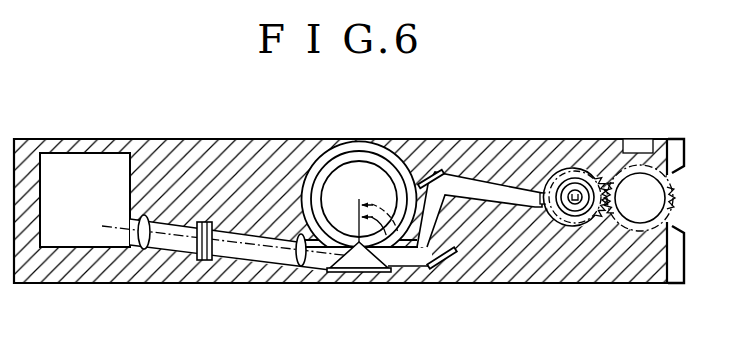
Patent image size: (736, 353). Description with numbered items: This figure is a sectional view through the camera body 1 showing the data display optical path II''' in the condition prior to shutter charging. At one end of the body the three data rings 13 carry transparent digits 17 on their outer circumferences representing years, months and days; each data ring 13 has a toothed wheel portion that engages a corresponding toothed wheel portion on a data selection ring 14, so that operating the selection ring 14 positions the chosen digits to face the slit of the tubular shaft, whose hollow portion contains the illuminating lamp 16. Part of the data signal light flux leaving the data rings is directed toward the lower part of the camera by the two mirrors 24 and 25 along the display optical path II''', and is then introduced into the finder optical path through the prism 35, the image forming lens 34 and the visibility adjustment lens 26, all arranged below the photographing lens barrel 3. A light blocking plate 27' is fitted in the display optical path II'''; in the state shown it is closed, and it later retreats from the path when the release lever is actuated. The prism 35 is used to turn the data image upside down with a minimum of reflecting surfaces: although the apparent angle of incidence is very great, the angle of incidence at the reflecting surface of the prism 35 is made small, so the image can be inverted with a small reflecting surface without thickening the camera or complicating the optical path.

The camera body 1 is at (213, 170).
The lens barrel 3 is at (334, 150).
The data ring 13 is at (574, 183).
The data selection ring 14 is at (664, 197).
The illuminating lamp 16 is at (584, 190).
The transparent digits 17 is at (553, 172).
The mirror 24 is at (422, 177).
The mirror 25 is at (444, 256).
The visibility adjustment lens 26 is at (146, 243).
The light blocking plate 27' is at (192, 276).
The display optical path II''' is at (230, 278).
The image forming lens 34 is at (302, 267).
The prism 35 is at (369, 272).